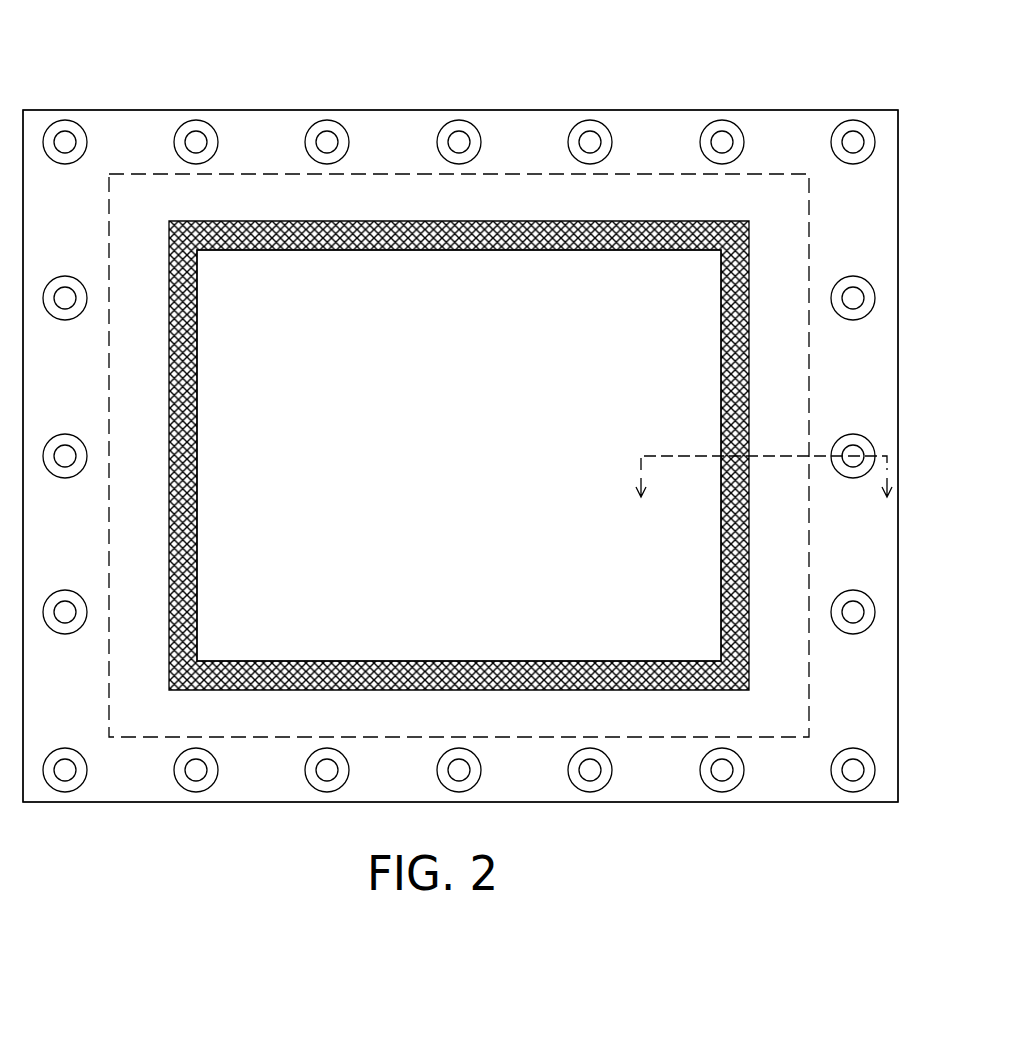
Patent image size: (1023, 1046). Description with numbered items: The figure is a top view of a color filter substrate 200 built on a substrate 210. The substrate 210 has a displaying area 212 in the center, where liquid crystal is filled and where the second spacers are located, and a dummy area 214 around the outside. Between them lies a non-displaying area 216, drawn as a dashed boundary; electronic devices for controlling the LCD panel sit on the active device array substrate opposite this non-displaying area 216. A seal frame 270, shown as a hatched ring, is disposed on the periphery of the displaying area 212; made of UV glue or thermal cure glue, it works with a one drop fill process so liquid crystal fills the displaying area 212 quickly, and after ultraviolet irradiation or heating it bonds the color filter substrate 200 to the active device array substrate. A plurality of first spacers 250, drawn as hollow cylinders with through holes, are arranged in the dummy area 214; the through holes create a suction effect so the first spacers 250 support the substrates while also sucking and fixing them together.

The color filter substrate 200 is at (505, 453).
The substrate 210 is at (871, 685).
The displaying area 212 is at (407, 313).
The dummy area 214 is at (833, 200).
The non-displaying area 216 is at (770, 202).
The first spacers 250 is at (855, 438).
The seal frame 270 is at (510, 238).